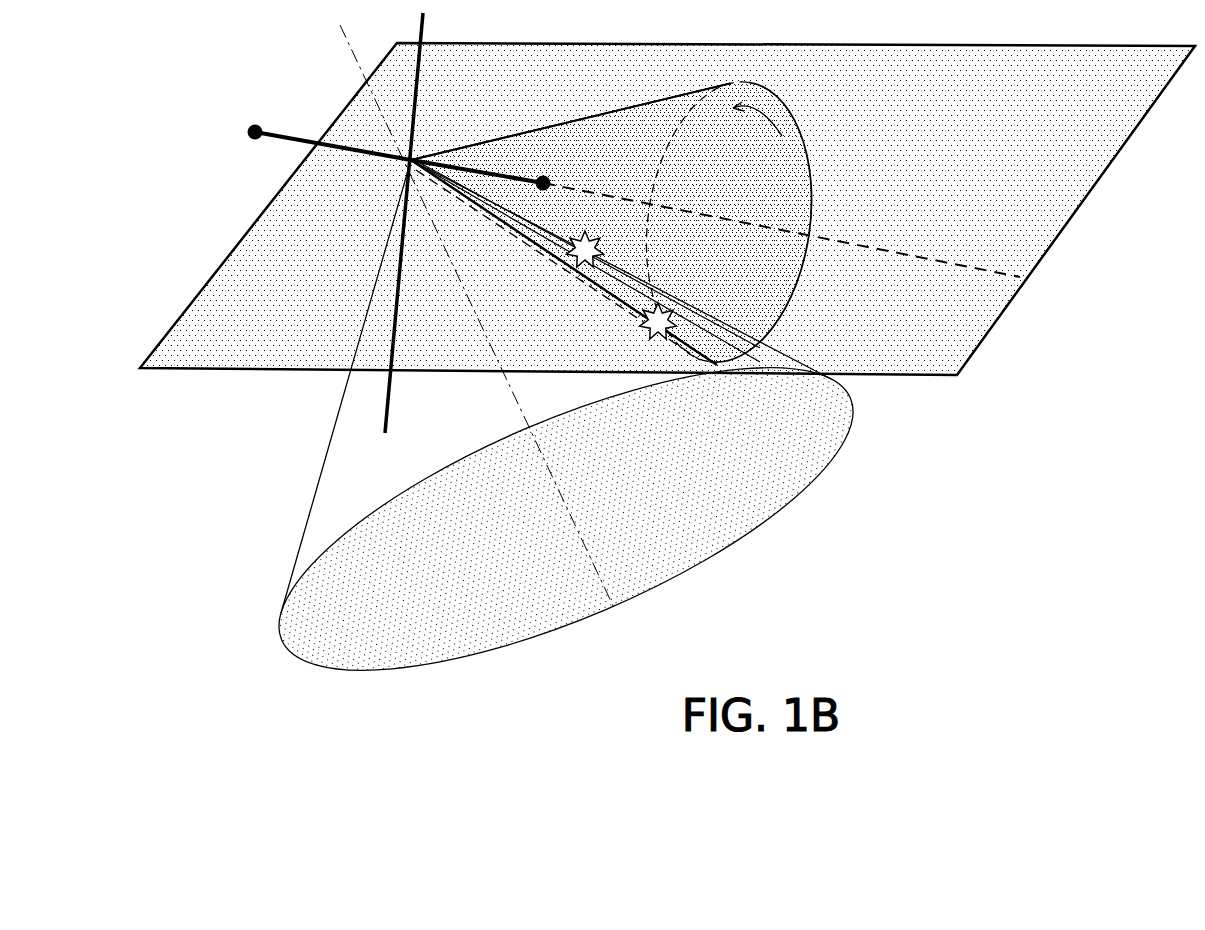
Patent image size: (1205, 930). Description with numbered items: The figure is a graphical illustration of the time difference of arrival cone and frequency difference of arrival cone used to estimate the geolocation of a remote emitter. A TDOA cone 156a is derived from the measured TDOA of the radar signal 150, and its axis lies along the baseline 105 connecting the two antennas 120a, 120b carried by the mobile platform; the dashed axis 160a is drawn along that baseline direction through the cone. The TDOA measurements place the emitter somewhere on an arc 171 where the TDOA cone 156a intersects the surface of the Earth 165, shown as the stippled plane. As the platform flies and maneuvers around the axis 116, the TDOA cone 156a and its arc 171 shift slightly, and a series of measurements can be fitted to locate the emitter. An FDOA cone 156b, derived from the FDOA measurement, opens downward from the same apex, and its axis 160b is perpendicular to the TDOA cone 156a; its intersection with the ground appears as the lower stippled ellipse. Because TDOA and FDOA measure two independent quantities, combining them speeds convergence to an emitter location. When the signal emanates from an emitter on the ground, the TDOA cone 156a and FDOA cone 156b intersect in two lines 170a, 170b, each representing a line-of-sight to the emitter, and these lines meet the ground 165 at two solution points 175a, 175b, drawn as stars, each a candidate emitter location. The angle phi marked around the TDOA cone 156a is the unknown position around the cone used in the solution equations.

The baseline 105 is at (402, 163).
The axis 116 is at (396, 346).
The antenna 120a is at (256, 124).
The antenna 120b is at (541, 175).
The radar signal 150 is at (772, 118).
The TDOA cone 156a is at (643, 100).
The FDOA cone 156b is at (318, 473).
The cone axis 160a is at (916, 262).
The axis 160b is at (587, 548).
The surface of the Earth 165 is at (1064, 229).
The line 170a is at (546, 253).
The line 170b is at (650, 291).
The arc 171 is at (813, 168).
The solution point 175a is at (640, 331).
The solution point 175b is at (590, 231).